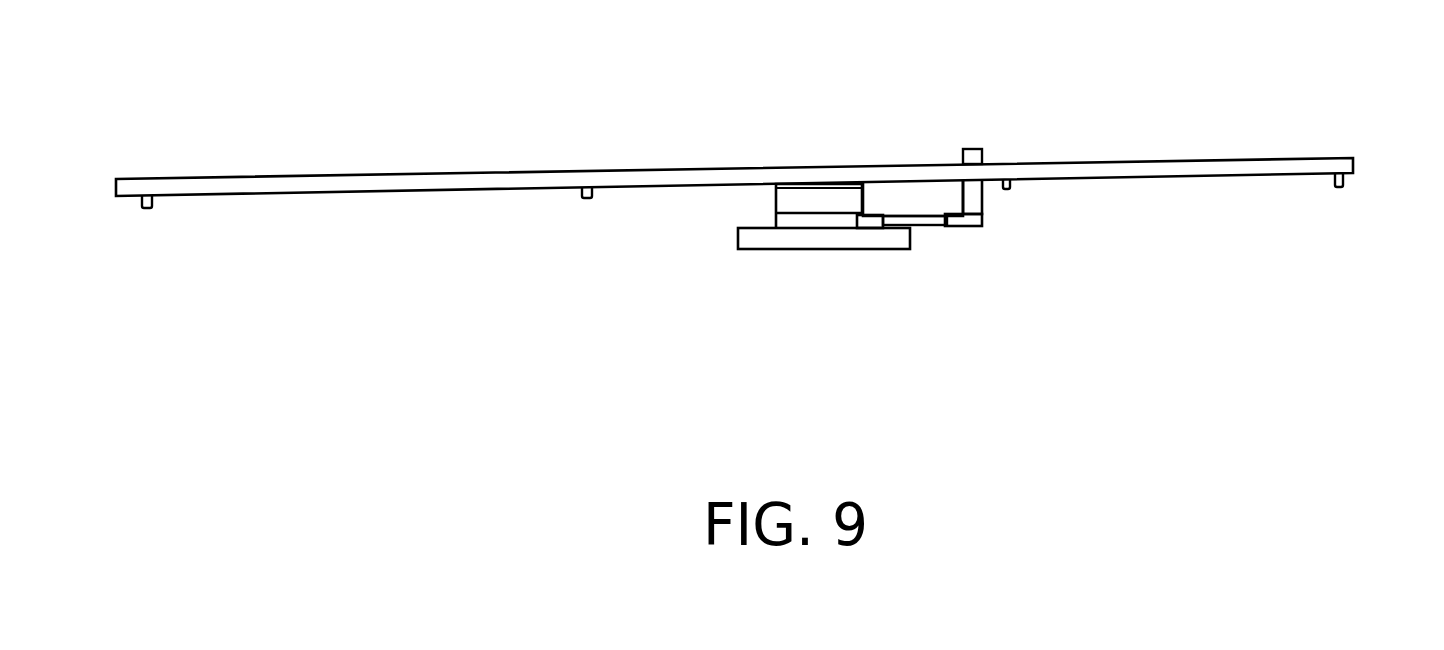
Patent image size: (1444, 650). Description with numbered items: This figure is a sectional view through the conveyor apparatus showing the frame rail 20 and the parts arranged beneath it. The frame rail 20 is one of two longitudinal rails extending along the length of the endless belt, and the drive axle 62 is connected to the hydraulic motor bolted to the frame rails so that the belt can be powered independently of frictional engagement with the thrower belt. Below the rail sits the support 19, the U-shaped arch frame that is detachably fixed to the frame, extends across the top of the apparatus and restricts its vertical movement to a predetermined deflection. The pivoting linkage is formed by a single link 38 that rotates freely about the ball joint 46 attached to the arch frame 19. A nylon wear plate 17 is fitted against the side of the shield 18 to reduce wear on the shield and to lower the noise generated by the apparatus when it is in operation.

The frame rail 20 is at (832, 167).
The drive axle 62 is at (582, 197).
The shield 18 is at (1350, 177).
The nylon wear plate 17 is at (775, 192).
The support 19 is at (820, 250).
The link 38 is at (932, 226).
The ball joint 46 is at (972, 226).